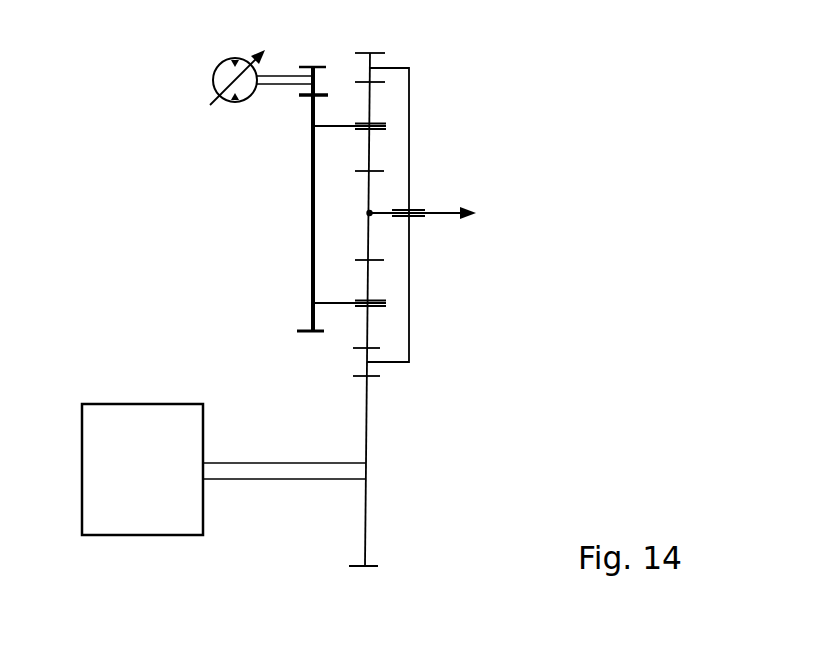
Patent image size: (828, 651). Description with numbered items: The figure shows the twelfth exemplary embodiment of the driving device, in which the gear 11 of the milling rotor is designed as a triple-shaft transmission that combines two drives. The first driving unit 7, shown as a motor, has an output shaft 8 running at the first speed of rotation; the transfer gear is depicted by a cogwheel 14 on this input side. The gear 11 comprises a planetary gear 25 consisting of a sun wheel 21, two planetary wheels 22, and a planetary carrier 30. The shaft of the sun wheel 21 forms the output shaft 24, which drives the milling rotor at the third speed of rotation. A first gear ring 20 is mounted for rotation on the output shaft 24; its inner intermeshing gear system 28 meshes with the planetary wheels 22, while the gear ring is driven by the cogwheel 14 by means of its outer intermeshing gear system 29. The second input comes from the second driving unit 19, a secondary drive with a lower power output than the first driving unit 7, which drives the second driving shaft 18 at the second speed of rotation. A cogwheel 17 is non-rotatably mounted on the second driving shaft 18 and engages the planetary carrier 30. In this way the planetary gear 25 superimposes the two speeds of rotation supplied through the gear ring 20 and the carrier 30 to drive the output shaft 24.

The first driving unit 7 is at (135, 523).
The output shaft 8 is at (257, 481).
The gear 11 is at (206, 233).
The cogwheel 14 is at (365, 517).
The cogwheel 17 is at (315, 78).
The second driving shaft 18 is at (277, 82).
The second driving unit 19 is at (215, 80).
The first gear ring 20 is at (409, 137).
The sun wheel 21 is at (370, 196).
The planetary wheels 22 is at (370, 102).
The output shaft 24 is at (437, 215).
The planetary gear 25 is at (558, 317).
The inner intermeshing gear system 28 is at (360, 350).
The outer intermeshing gear system 29 is at (372, 378).
The planetary carrier 30 is at (311, 253).